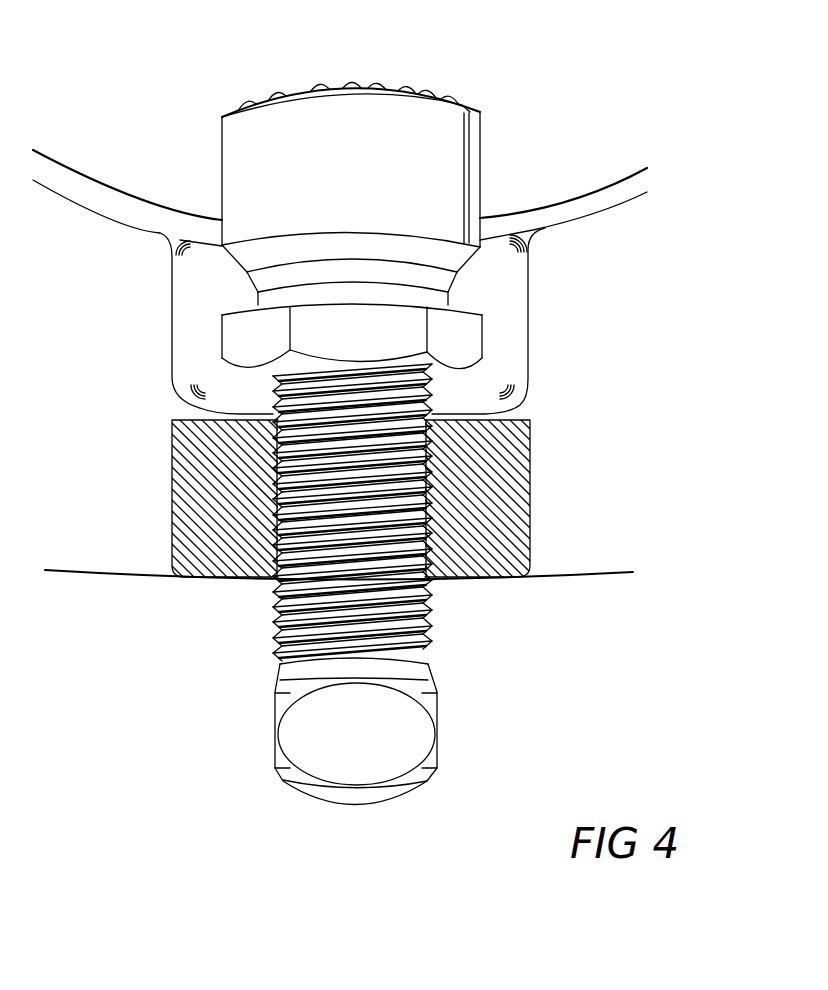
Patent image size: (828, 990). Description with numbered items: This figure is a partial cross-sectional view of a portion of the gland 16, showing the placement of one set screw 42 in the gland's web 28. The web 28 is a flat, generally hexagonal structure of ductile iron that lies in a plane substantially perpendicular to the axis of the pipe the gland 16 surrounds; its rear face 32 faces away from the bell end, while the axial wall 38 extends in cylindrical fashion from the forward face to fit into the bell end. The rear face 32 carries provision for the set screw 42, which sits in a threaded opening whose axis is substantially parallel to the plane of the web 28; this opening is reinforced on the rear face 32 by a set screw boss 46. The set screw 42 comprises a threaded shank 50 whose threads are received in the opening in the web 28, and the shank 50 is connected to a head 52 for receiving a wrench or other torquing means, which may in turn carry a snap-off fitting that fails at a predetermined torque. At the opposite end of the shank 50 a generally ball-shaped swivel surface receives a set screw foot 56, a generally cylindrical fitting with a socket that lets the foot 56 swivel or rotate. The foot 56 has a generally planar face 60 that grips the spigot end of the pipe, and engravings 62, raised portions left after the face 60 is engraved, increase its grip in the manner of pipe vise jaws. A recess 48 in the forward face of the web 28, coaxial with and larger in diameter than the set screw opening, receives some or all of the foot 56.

The gland 16 is at (588, 560).
The web 28 is at (436, 497).
The rear face 32 is at (585, 363).
The axial wall 38 is at (588, 203).
The set screw 42 is at (427, 650).
The set screw boss 46 is at (250, 548).
The recess 48 is at (490, 262).
The threaded shank 50 is at (403, 595).
The head 52 is at (383, 725).
The set screw foot 56 is at (405, 172).
The face 60 is at (407, 82).
The engravings 62 is at (357, 82).